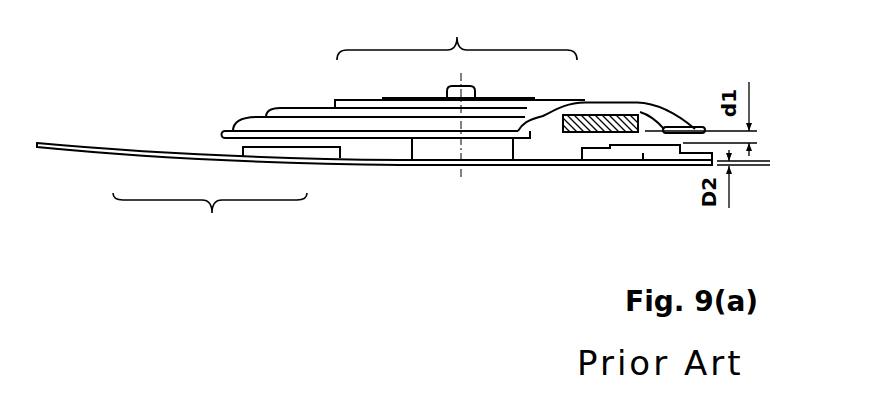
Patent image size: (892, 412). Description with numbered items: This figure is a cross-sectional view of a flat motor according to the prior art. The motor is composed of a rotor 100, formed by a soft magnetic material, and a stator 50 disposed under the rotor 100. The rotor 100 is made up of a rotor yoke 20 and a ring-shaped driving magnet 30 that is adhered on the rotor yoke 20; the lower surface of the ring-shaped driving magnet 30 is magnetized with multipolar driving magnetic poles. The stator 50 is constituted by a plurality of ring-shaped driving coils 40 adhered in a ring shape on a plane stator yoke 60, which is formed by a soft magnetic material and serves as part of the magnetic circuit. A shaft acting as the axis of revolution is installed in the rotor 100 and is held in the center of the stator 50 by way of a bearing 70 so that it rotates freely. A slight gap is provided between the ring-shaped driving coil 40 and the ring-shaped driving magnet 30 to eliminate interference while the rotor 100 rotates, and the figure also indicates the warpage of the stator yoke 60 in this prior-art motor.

The rotor 100 is at (433, 23).
The rotor yoke 20 is at (288, 130).
The ring-shaped driving magnet 30 is at (613, 115).
The ring-shaped driving coil 40 is at (265, 147).
The stator 50 is at (228, 246).
The stator yoke 60 is at (194, 158).
The bearing 70 is at (441, 151).